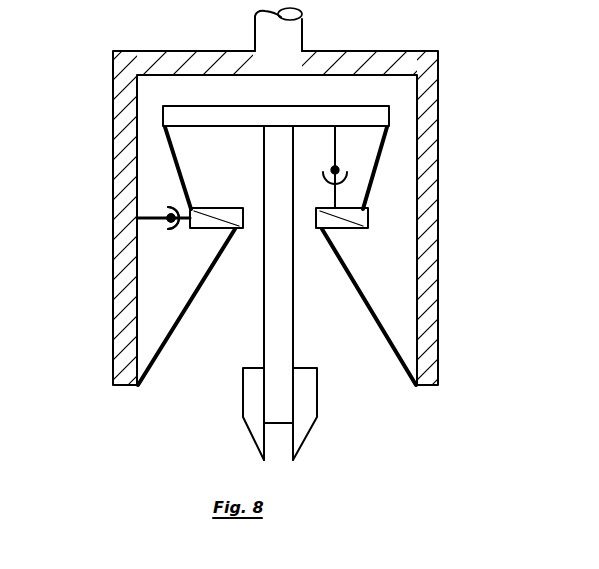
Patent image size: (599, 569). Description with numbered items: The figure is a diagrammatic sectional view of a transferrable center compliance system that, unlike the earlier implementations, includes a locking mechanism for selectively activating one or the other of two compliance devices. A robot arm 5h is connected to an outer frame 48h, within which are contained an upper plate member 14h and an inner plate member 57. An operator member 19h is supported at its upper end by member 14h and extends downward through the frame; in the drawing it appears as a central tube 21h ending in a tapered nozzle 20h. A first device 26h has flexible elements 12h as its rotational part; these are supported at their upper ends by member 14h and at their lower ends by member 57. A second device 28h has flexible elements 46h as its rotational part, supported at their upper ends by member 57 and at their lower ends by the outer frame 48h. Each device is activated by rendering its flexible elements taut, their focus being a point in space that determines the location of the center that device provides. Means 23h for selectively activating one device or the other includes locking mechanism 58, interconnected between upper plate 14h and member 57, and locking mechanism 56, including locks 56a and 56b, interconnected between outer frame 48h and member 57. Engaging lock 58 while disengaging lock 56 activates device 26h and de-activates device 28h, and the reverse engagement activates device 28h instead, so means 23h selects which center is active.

The robot arm 5h is at (301, 15).
The outer frame 48h is at (438, 106).
The member 14h is at (271, 106).
The flexible elements 12h is at (176, 150).
The member 57 is at (222, 208).
The locking mechanism 58 is at (320, 176).
The locking mechanism 56 is at (172, 203).
The lock 56a is at (169, 224).
The lock 56b is at (170, 230).
The means for selectively activating 23h is at (143, 199).
The device 26h is at (406, 186).
The device 28h is at (406, 322).
The flexible elements 46h is at (180, 323).
The operator member 19h is at (254, 314).
The tube 21h is at (295, 302).
The nozzle 20h is at (318, 383).